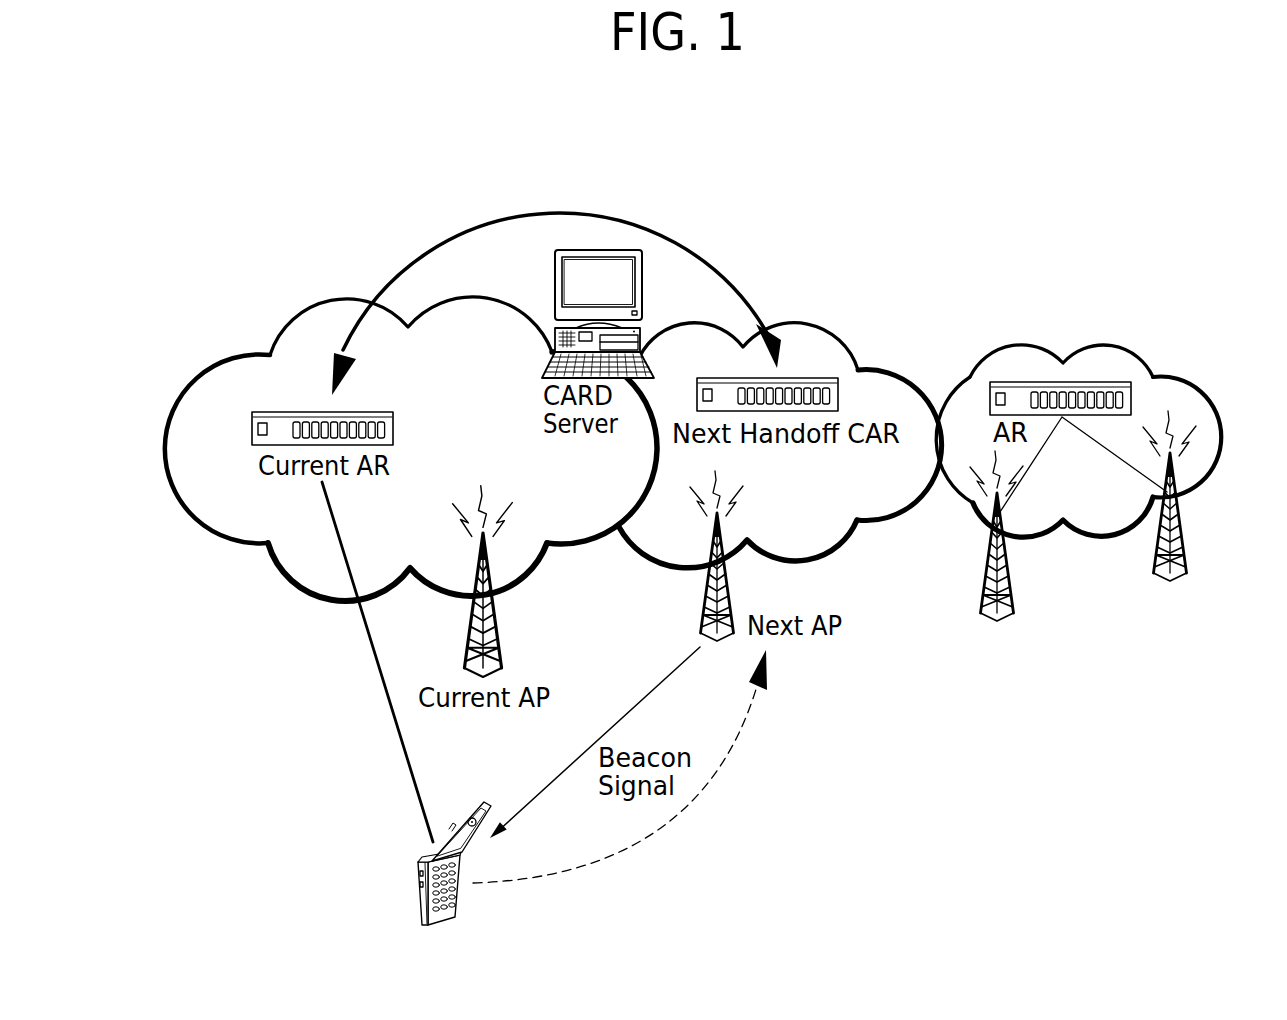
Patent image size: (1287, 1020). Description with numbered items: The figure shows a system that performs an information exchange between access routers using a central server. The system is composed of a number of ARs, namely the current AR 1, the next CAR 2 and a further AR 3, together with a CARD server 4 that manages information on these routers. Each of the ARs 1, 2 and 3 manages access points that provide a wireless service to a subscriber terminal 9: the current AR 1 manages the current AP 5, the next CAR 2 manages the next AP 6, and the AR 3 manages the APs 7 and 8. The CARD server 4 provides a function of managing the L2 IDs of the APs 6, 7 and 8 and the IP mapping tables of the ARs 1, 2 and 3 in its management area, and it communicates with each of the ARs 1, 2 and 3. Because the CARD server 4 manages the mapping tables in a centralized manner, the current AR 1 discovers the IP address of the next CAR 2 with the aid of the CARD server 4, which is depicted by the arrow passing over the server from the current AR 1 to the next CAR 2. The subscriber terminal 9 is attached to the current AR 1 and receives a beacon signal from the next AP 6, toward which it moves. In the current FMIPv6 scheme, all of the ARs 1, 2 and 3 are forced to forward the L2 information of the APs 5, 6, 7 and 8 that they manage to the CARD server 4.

The current AR 1 is at (394, 427).
The next CAR 2 is at (841, 395).
The AR 3 is at (1107, 382).
The CARD server 4 is at (643, 297).
The AP 5 is at (498, 640).
The AP 6 is at (736, 602).
The AP 7 is at (1014, 578).
The AP 8 is at (1188, 545).
The subscriber terminal 9 is at (415, 892).